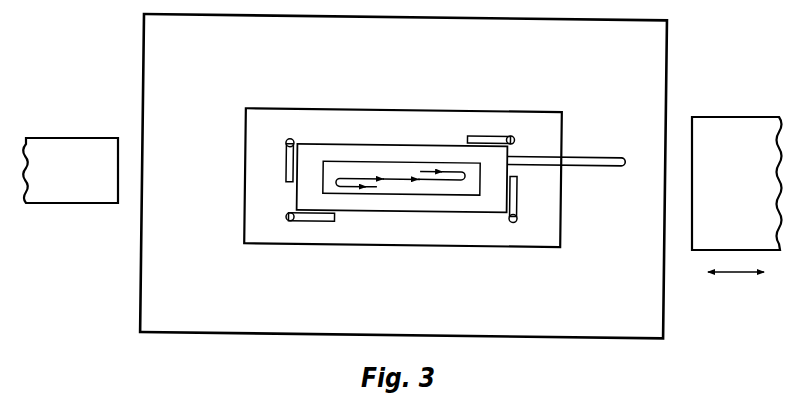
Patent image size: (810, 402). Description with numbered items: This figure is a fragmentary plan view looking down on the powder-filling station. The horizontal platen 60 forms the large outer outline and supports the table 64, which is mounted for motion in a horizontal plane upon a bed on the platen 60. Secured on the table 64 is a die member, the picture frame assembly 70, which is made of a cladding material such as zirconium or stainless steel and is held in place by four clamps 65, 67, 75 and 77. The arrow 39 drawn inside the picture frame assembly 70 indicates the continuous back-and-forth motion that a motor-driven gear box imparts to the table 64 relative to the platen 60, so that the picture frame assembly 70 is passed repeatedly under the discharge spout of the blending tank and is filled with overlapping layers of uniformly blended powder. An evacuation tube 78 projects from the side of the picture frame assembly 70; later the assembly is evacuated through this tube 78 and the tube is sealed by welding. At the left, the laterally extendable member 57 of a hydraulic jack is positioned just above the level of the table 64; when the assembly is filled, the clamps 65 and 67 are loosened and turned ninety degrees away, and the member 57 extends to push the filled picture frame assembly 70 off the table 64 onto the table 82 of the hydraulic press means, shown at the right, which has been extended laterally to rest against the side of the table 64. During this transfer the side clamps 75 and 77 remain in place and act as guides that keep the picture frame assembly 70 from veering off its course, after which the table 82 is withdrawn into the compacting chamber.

The arrow 39 is at (461, 167).
The laterally extendable member 57 is at (81, 181).
The platen 60 is at (596, 301).
The table 64 is at (476, 233).
The clamp 65 is at (288, 151).
The clamp 67 is at (519, 178).
The picture frame assembly 70 is at (457, 206).
The side clamp 75 is at (337, 215).
The side clamp 77 is at (469, 134).
The evacuation tube 78 is at (619, 152).
The table 82 is at (721, 193).